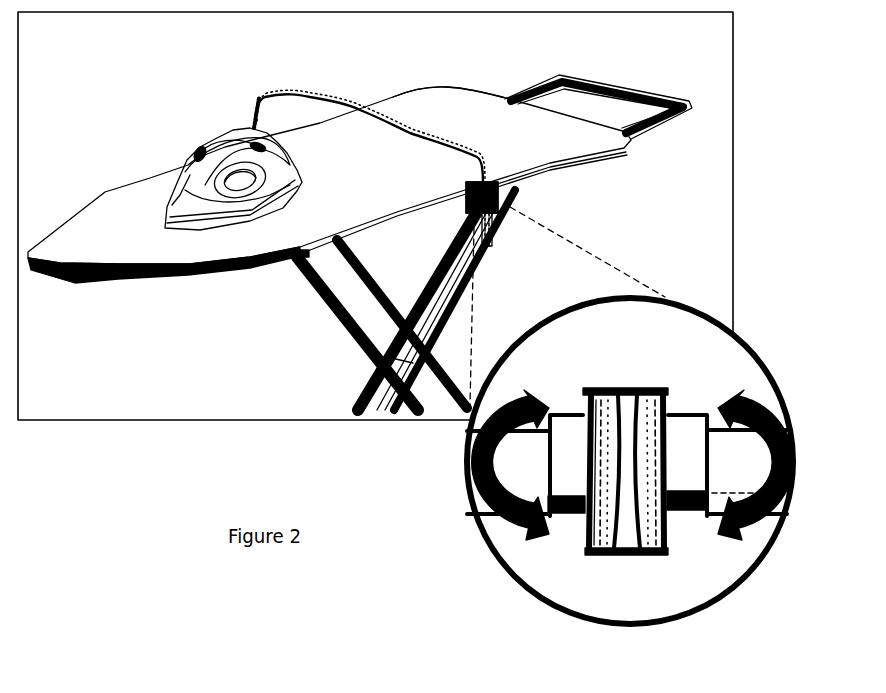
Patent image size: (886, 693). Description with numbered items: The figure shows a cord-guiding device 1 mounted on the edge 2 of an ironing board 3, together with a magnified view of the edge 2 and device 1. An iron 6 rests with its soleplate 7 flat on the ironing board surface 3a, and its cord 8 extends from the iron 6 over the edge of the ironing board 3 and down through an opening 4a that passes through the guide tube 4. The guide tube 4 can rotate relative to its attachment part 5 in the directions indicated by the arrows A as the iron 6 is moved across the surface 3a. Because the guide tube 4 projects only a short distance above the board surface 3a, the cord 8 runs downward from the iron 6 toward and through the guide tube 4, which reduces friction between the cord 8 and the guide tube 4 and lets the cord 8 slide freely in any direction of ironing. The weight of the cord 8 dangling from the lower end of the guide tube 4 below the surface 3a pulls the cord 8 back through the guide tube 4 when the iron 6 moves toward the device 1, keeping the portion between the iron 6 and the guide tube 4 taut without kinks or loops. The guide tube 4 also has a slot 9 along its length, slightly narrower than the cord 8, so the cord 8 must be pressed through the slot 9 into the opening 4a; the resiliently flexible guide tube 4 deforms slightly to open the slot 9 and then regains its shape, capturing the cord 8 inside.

The device 1 is at (527, 210).
The edge 2 is at (520, 473).
The ironing board 3 is at (393, 95).
The ironing board surface 3a is at (447, 107).
The guide tube 4 is at (495, 225).
The opening 4a is at (640, 388).
The attachment part 5 is at (463, 190).
The iron 6 is at (240, 147).
The soleplate 7 is at (198, 232).
The cord 8 is at (308, 97).
The slot 9 is at (618, 510).
The arrows A is at (487, 490).